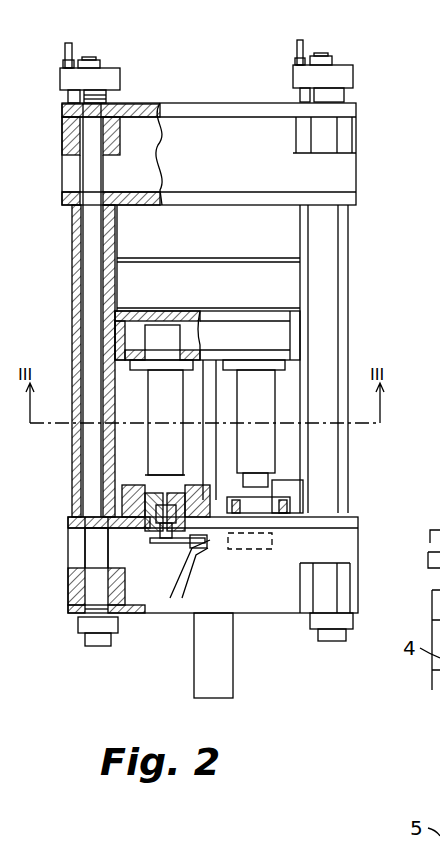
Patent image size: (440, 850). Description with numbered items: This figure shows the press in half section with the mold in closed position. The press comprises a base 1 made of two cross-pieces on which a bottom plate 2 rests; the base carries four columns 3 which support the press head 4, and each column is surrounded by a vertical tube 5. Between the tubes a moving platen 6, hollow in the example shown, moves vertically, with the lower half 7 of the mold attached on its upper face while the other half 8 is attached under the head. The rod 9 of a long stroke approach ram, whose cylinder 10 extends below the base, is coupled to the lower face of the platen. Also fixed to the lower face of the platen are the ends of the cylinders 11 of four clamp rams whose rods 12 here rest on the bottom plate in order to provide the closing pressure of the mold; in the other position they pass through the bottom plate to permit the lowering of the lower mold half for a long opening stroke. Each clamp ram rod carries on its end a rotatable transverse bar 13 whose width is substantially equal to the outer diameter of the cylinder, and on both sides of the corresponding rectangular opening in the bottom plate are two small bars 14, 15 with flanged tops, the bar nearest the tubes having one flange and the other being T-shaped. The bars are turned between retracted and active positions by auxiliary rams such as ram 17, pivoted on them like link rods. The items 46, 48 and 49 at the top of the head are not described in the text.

The base 1 is at (68, 590).
The bottom plate 2 is at (72, 522).
The column 3 is at (92, 322).
The press head 4 is at (63, 130).
The vertical tube 5 is at (74, 243).
The moving platen 6 is at (118, 347).
The lower half of the mold 7 is at (290, 280).
The upper half of the mold 8 is at (281, 202).
The rod of the approach ram 9 is at (218, 458).
The cylinder of the approach ram 10 is at (228, 655).
The cylinder of the clamp ram 11 is at (250, 412).
The rod of the clamp ram 12 is at (260, 481).
The transverse bar 13 is at (138, 530).
The small bar 14 is at (105, 520).
The small bar 15 is at (218, 500).
The auxiliary ram 17 is at (188, 582).
The clamping plate 46 is at (62, 77).
The nut 48 is at (70, 95).
The pin 49 is at (72, 53).